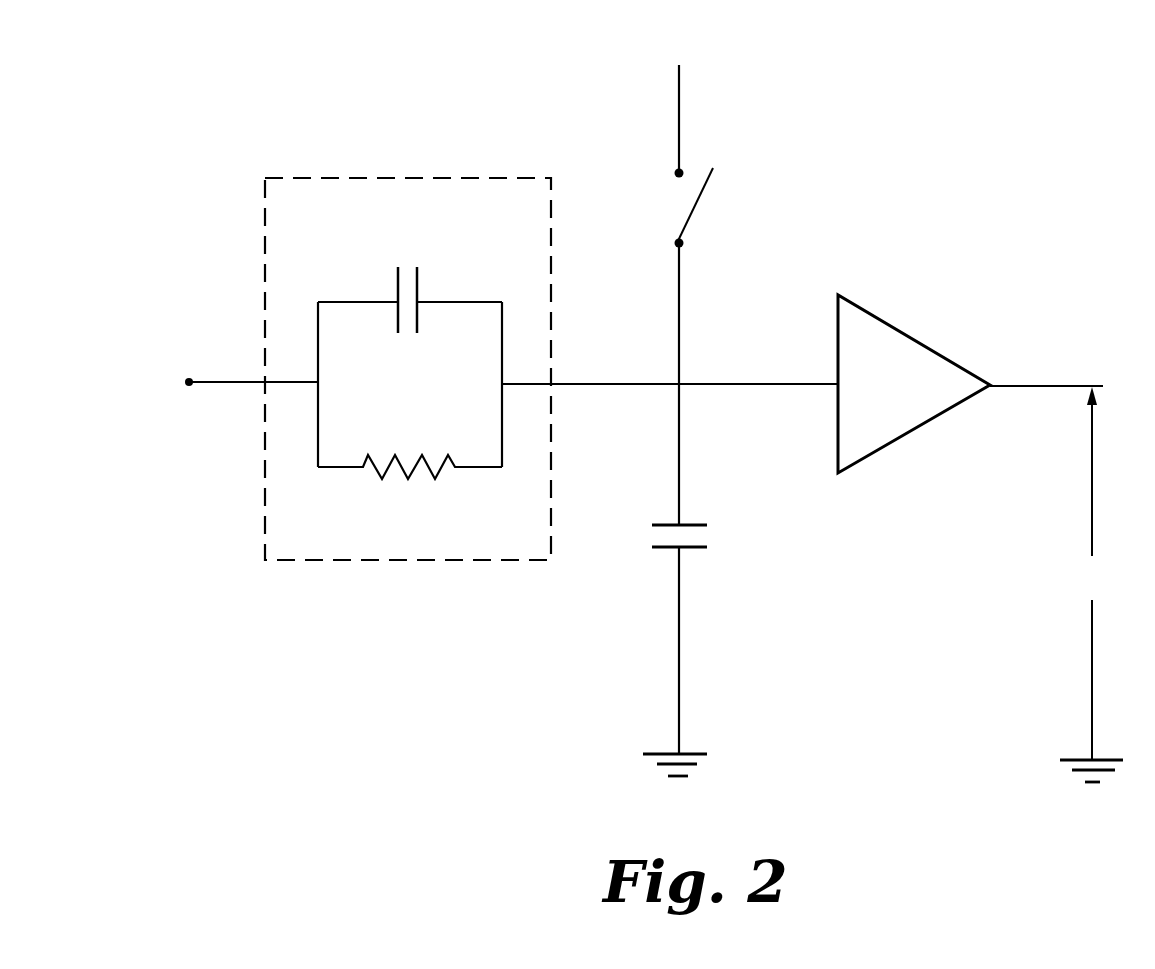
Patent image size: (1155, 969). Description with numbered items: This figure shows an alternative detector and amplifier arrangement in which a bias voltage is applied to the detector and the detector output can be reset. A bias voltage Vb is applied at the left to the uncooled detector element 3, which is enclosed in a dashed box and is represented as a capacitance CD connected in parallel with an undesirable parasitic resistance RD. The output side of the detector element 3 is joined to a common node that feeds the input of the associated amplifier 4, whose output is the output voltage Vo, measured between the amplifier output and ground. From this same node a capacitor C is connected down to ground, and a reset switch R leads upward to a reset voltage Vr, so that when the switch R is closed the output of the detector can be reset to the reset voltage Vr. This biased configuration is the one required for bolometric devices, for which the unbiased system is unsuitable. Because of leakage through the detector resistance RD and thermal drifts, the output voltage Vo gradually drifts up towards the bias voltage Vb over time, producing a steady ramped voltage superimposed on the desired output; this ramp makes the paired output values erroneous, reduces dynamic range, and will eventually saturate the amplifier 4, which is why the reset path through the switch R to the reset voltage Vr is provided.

The uncooled detector element 3 is at (408, 405).
The amplifier 4 is at (903, 330).
The bias voltage Vb is at (234, 383).
The capacitance CD is at (410, 281).
The parasitic resistance RD is at (410, 485).
The reset voltage Vr is at (676, 104).
The reset switch R is at (697, 208).
The capacitor C is at (687, 554).
The output voltage Vo is at (1099, 573).